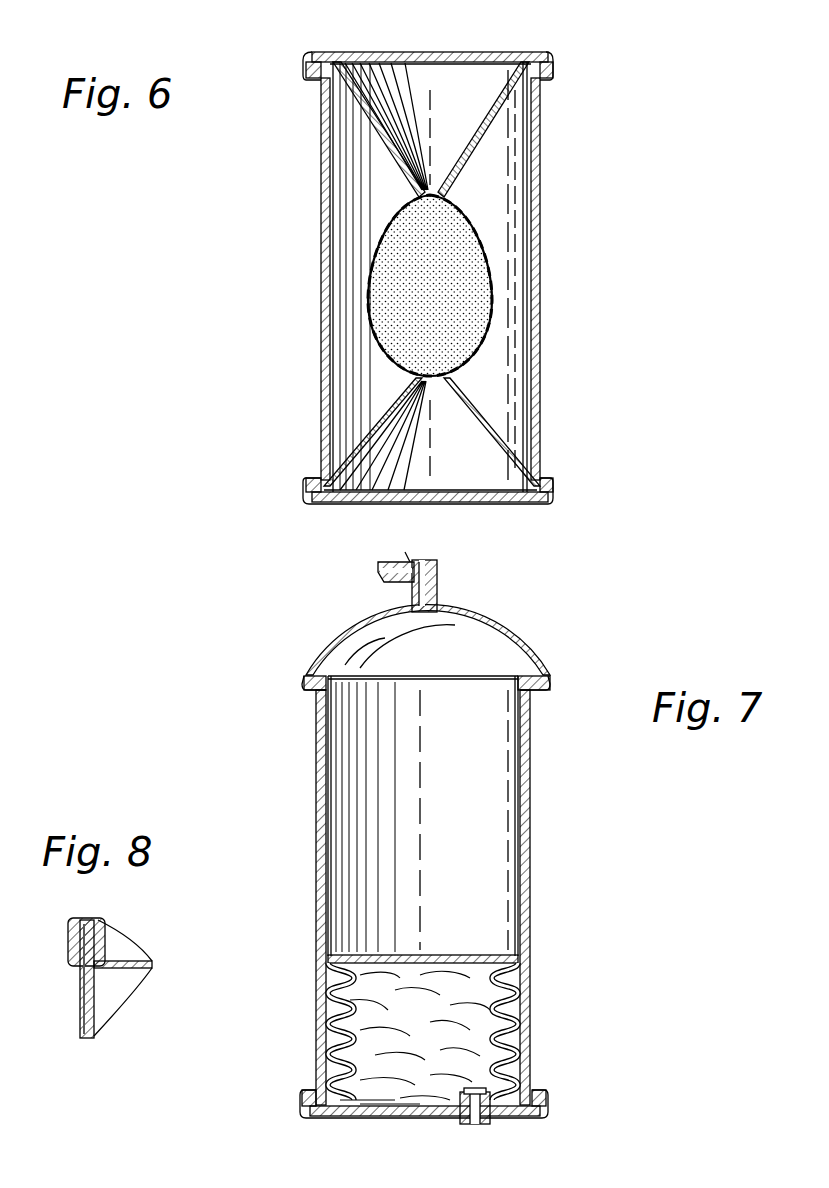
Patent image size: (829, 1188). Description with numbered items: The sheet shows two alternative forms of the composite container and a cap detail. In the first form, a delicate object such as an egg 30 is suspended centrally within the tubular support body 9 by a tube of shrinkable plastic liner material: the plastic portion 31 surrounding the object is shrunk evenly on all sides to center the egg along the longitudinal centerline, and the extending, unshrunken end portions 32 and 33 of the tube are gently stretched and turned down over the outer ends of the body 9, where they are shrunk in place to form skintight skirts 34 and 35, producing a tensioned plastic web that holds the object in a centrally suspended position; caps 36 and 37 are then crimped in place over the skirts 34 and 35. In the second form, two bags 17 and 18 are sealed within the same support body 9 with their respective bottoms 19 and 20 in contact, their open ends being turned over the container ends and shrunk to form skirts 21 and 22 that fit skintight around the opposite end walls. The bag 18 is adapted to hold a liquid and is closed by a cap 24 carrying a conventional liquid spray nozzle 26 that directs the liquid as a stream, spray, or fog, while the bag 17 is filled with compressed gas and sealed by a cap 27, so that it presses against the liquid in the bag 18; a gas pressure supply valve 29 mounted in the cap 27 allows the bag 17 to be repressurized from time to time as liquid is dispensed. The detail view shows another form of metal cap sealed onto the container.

In FIG. 6, the support body 9 is at (541, 187).
In FIG. 7, the support body 9 is at (316, 846).
In FIG. 7, the bag 17 is at (352, 1016).
In FIG. 7, the bag 18 is at (512, 806).
In FIG. 7, the bottom 19 is at (519, 975).
In FIG. 7, the bottom 20 is at (452, 955).
In FIG. 7, the skirt 21 is at (310, 1080).
In FIG. 7, the skirt 22 is at (318, 714).
In FIG. 8, the skirt 22 is at (110, 978).
In FIG. 7, the cap 24 is at (333, 642).
In FIG. 7, the liquid spray nozzle 26 is at (440, 588).
In FIG. 7, the cap 27 is at (394, 1117).
In FIG. 7, the gas pressure supply valve 29 is at (480, 1122).
In FIG. 6, the egg 30 is at (480, 268).
In FIG. 6, the plastic portion 31 is at (370, 320).
In FIG. 6, the tube portion 32 is at (490, 431).
In FIG. 6, the tube portion 33 is at (378, 138).
In FIG. 6, the skirt 34 is at (321, 470).
In FIG. 6, the skirt 35 is at (549, 92).
In FIG. 6, the cap 36 is at (478, 504).
In FIG. 6, the cap 37 is at (400, 52).